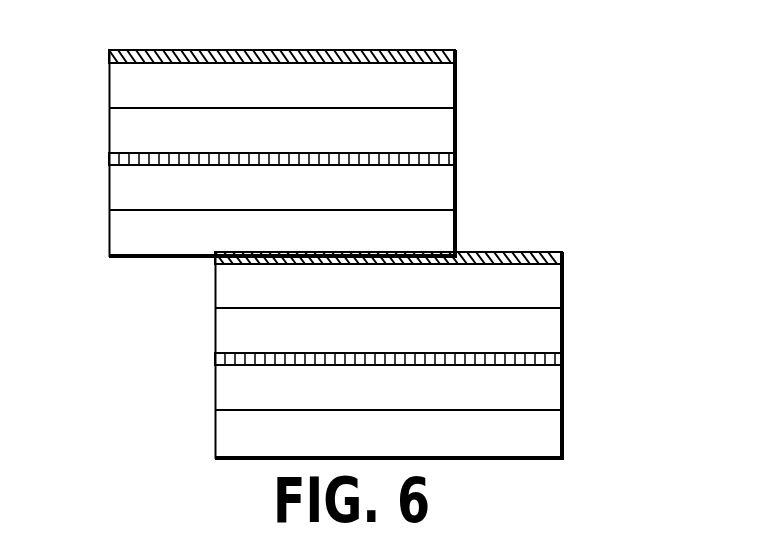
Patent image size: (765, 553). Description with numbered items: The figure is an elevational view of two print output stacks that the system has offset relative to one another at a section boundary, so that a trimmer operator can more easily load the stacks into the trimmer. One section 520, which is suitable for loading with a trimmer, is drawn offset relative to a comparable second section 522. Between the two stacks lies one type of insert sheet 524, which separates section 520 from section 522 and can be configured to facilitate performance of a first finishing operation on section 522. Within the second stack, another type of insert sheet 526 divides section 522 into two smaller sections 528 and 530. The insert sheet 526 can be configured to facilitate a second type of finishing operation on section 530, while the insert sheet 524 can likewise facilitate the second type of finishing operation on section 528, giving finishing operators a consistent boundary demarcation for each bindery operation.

The section 520 is at (473, 50).
The second section 522 is at (203, 255).
The insert sheet 524 is at (400, 50).
The insert sheet 526 is at (140, 157).
The smaller section 528 is at (577, 253).
The smaller section 530 is at (577, 362).